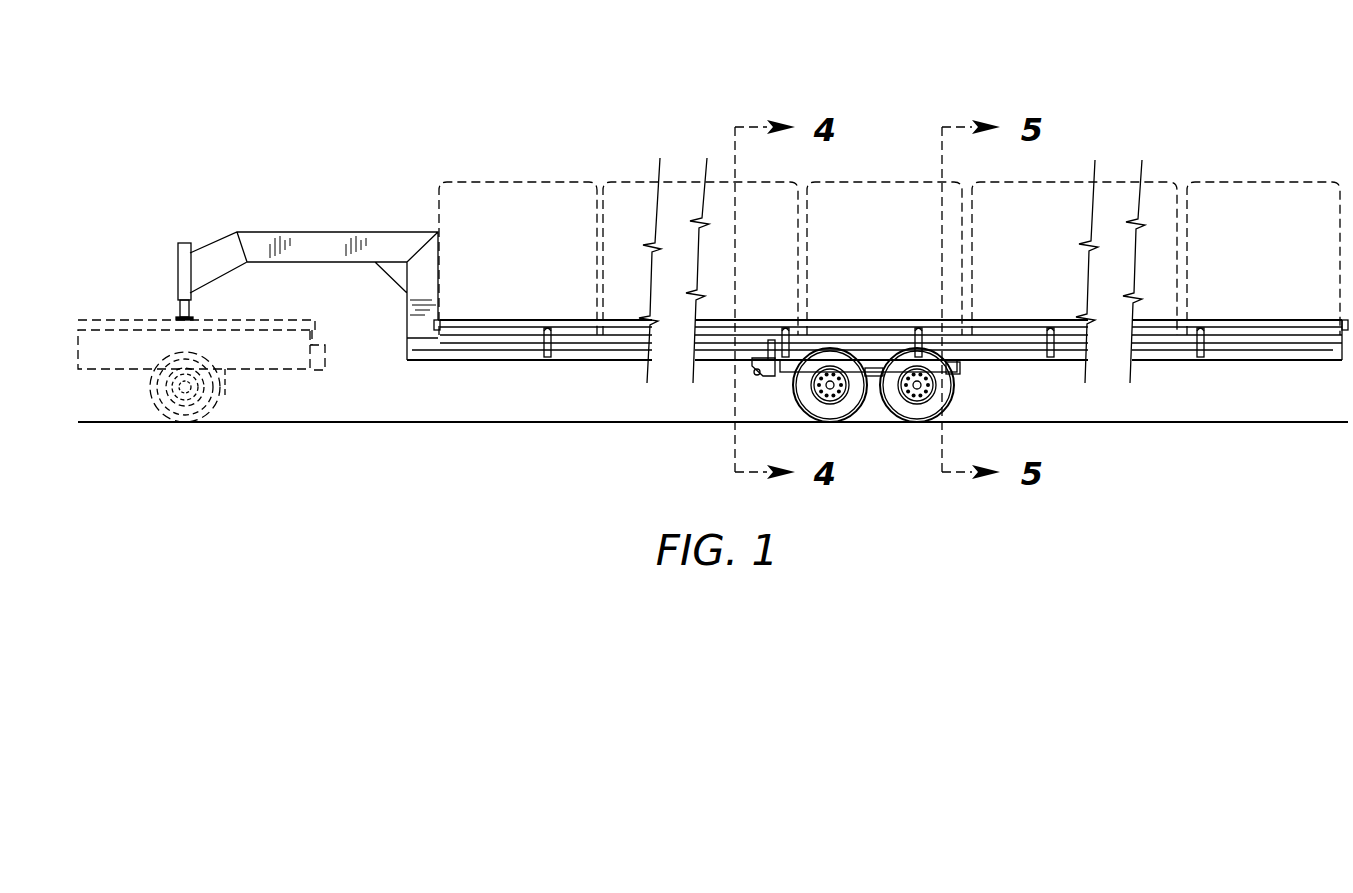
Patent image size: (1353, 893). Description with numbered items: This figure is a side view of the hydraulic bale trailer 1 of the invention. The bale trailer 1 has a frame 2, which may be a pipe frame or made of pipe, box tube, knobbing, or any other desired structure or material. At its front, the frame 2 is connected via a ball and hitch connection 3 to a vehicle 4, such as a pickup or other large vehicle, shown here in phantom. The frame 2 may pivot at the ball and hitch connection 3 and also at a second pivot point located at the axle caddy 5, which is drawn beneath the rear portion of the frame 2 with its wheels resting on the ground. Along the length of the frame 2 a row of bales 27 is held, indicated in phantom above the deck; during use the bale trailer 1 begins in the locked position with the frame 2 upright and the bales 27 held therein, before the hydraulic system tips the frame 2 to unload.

The bale trailer 1 is at (325, 106).
The frame 2 is at (510, 355).
The ball and hitch connection 3 is at (182, 277).
The vehicle 4 is at (125, 352).
The axle caddy 5 is at (873, 373).
The bales 27 is at (527, 205).